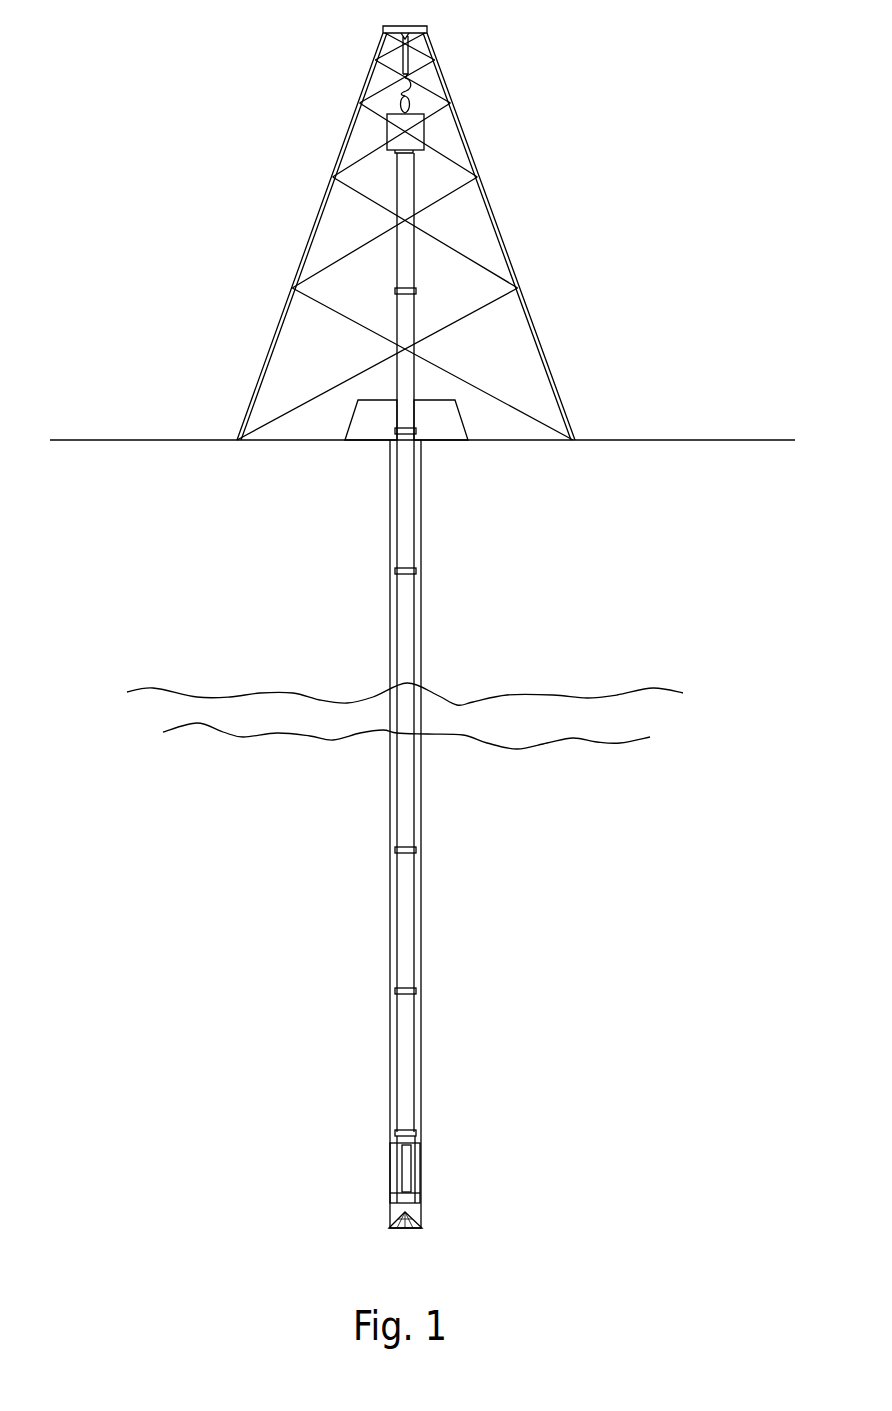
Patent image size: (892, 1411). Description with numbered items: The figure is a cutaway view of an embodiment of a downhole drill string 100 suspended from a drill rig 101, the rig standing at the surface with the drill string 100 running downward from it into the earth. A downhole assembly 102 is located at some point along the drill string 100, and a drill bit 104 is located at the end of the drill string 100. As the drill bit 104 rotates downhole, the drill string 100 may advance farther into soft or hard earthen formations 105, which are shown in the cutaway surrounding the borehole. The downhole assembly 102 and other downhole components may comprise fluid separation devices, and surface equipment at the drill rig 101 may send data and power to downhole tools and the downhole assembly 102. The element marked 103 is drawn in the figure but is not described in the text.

The downhole drill string 100 is at (427, 150).
The drill rig 101 is at (445, 77).
The downhole assembly 102 is at (378, 1174).
The drill string 103 is at (393, 838).
The drill bit 104 is at (422, 1228).
The earthen formations 105 is at (535, 665).